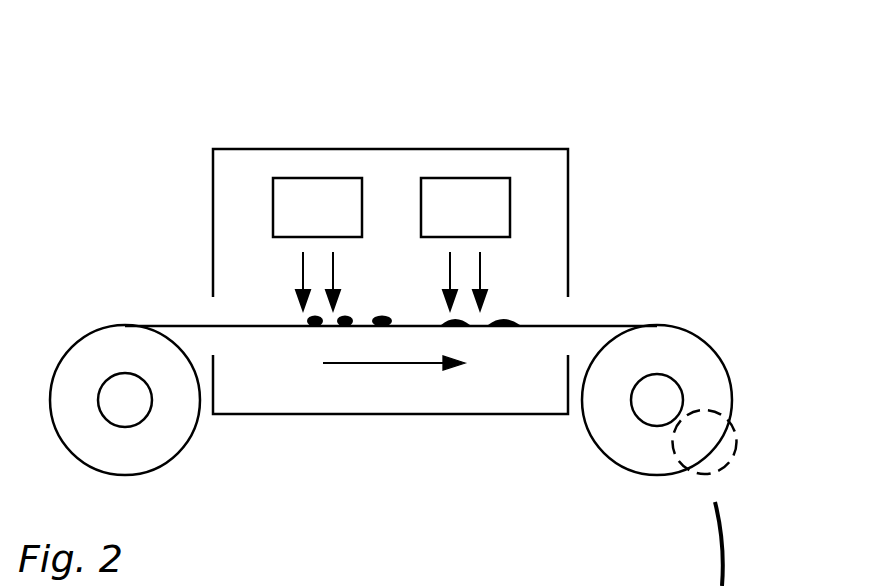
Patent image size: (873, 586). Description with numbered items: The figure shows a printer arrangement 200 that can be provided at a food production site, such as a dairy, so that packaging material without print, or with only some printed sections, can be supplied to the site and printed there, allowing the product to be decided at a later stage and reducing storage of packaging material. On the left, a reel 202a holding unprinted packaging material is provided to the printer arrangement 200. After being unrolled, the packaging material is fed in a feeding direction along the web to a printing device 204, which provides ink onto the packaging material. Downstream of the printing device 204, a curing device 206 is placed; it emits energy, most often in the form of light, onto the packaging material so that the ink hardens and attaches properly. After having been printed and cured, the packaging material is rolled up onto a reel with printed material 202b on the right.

The printer arrangement 200 is at (115, 155).
The printing device 204 is at (327, 193).
The curing device 206 is at (467, 193).
The reel 202a is at (158, 440).
The reel with printed PM 202b is at (727, 392).